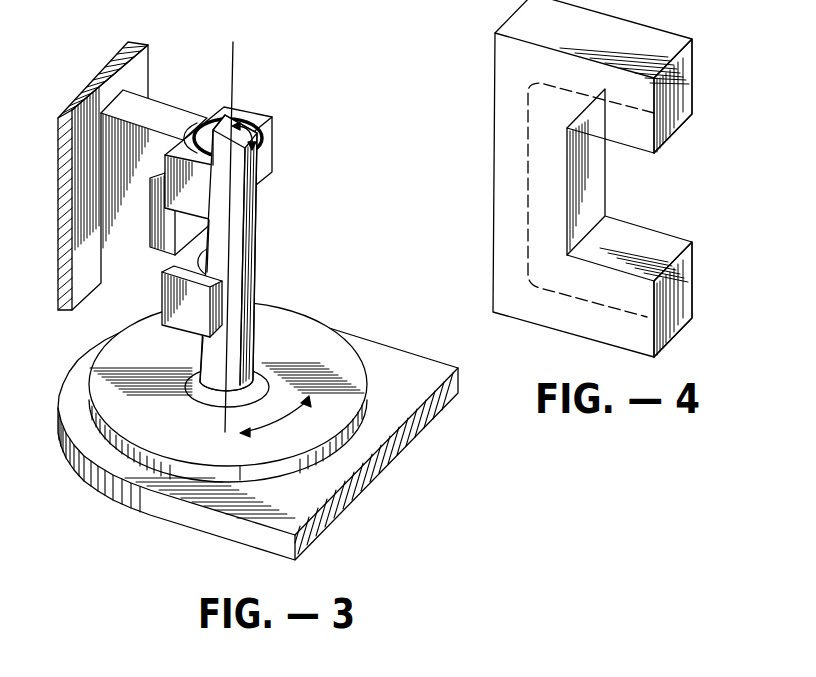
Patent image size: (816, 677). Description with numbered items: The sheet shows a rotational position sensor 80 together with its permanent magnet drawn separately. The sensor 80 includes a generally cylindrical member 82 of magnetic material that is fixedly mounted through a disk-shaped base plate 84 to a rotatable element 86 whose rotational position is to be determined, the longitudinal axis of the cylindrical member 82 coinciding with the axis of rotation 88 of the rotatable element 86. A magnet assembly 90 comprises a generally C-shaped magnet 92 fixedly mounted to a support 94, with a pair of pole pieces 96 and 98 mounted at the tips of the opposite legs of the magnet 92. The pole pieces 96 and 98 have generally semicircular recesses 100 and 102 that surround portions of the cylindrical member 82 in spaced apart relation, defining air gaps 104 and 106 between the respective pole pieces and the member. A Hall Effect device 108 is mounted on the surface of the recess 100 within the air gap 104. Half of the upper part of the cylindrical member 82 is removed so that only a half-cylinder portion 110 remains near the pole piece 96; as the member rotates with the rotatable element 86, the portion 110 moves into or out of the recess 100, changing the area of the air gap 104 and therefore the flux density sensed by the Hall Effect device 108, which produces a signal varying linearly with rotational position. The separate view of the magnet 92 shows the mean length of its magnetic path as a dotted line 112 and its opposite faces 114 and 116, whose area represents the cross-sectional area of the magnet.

In FIG. 3, the sensor 80 is at (282, 233).
In FIG. 3, the cylindrical member 82 is at (256, 140).
In FIG. 3, the disk-shaped base plate 84 is at (290, 326).
In FIG. 3, the rotatable element 86 is at (150, 507).
In FIG. 3, the axis of rotation 88 is at (235, 64).
In FIG. 3, the magnet assembly 90 is at (155, 108).
In FIG. 3, the C-shaped magnet 92 is at (112, 276).
In FIG. 4, the C-shaped magnet 92 is at (652, 45).
In FIG. 3, the support 94 is at (61, 186).
In FIG. 3, the pole piece 96 is at (218, 200).
In FIG. 3, the pole piece 98 is at (216, 297).
In FIG. 3, the semicircular recess 100 is at (200, 134).
In FIG. 3, the semicircular recess 102 is at (180, 260).
In FIG. 3, the air gap 104 is at (255, 113).
In FIG. 3, the air gap 106 is at (172, 258).
In FIG. 3, the Hall Effect device 108 is at (235, 122).
In FIG. 3, the half-cylinder portion 110 is at (254, 188).
In FIG. 4, the dotted line 112 is at (528, 140).
In FIG. 4, the face 114 is at (684, 97).
In FIG. 4, the face 116 is at (672, 282).